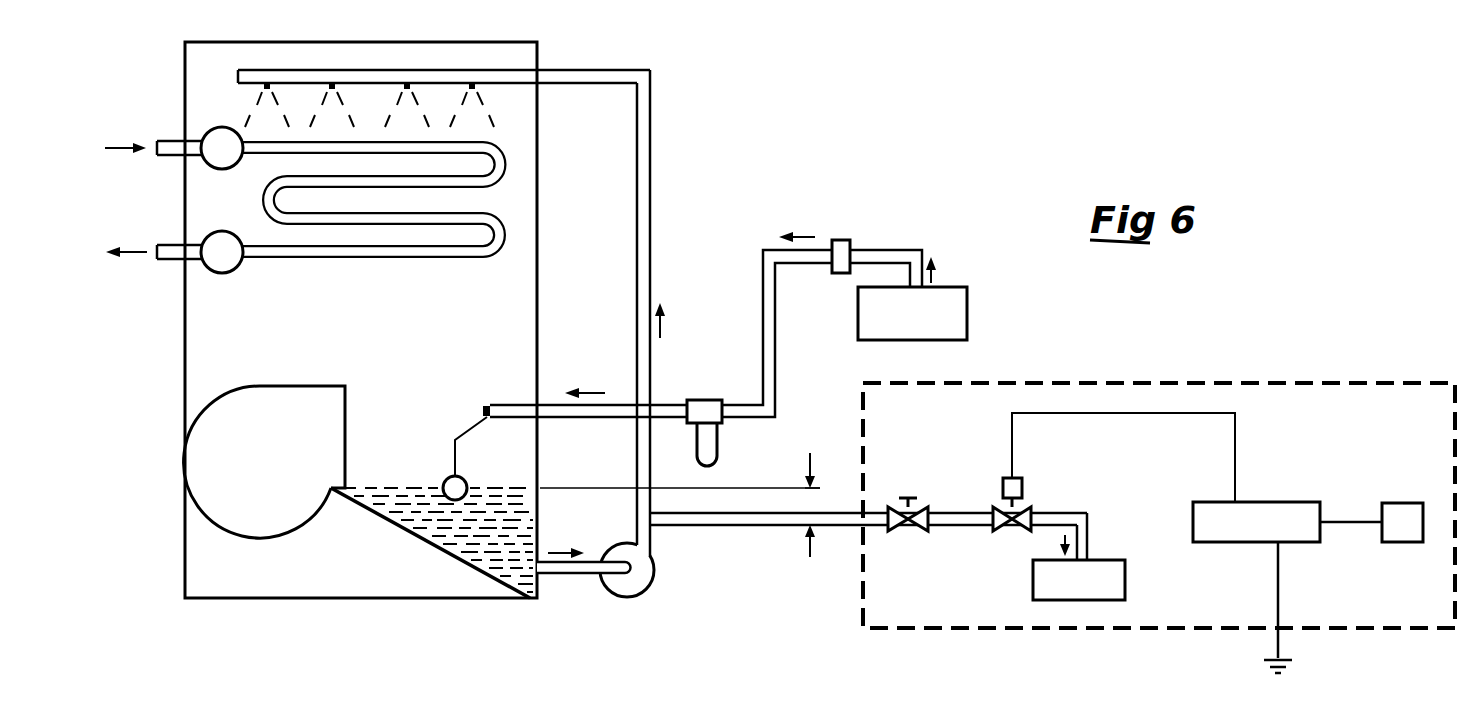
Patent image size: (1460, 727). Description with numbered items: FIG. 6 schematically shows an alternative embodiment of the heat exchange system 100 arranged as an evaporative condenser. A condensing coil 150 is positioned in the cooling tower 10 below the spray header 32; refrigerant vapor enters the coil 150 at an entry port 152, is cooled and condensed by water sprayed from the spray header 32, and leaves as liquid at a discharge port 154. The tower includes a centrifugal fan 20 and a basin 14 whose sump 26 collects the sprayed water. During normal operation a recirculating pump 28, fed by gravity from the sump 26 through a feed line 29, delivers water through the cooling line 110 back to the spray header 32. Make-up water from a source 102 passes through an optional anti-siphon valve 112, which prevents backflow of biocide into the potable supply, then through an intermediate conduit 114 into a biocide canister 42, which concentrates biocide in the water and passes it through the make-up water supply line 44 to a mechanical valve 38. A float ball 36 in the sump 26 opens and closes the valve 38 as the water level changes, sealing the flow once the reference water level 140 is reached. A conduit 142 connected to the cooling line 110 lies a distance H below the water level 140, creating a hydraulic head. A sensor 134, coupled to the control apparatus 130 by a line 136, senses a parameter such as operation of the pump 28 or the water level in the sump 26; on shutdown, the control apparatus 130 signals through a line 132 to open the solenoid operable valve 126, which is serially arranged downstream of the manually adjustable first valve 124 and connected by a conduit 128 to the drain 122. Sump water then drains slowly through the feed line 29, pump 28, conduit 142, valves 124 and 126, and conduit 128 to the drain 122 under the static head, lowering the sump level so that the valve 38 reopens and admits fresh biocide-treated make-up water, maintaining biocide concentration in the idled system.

The heat exchange system 100 is at (607, 27).
The cooling tower 10 is at (540, 262).
The cooling tower basin 14 is at (550, 512).
The centrifugal fan 20 is at (207, 516).
The sump 26 is at (491, 556).
The recirculating pump 28 is at (653, 577).
The feed line 29 is at (565, 578).
The spray header 32 is at (238, 75).
The float ball 36 is at (450, 477).
The mechanical valve 38 is at (487, 407).
The canister 42 is at (697, 448).
The make-up water supply line 44 is at (573, 418).
The source of make-up water 102 is at (967, 312).
The cooling line 110 is at (652, 150).
The anti-siphon valve 112 is at (841, 240).
The intermediate conduit 114 is at (763, 320).
The drain 122 is at (1126, 582).
The first valve 124 is at (928, 512).
The solenoid operable valve 126 is at (1032, 512).
The conduit 128 is at (1088, 536).
The control apparatus 130 is at (1268, 502).
The line 132 is at (1012, 437).
The sensor 134 is at (1410, 503).
The line 136 is at (1352, 518).
The reference water level 140 is at (730, 488).
The conduit 142 is at (725, 514).
The condensing coil 150 is at (437, 278).
The entry port 152 is at (228, 170).
The discharge port 154 is at (228, 273).